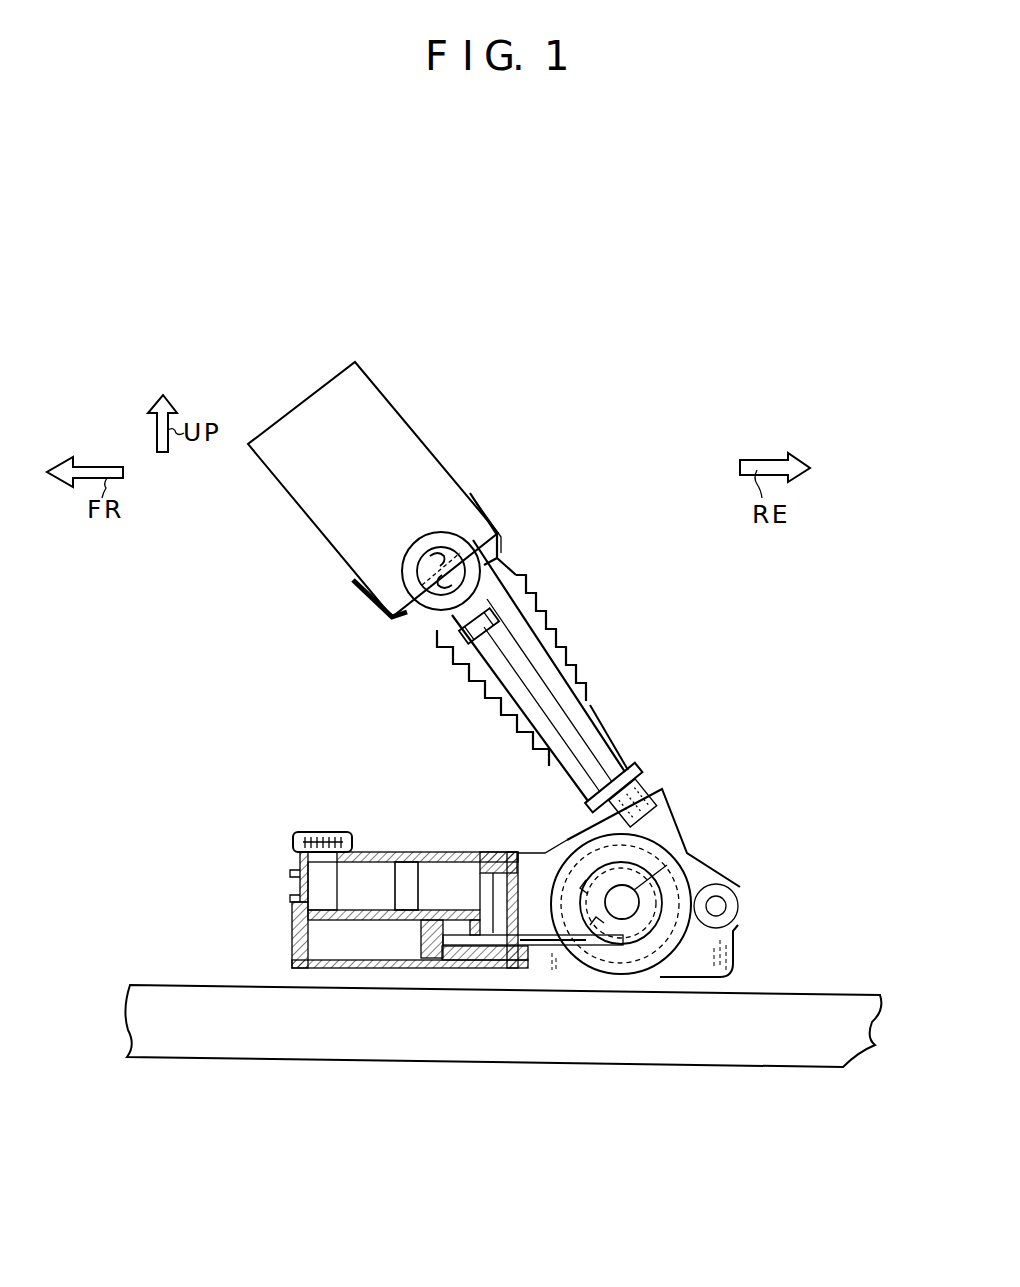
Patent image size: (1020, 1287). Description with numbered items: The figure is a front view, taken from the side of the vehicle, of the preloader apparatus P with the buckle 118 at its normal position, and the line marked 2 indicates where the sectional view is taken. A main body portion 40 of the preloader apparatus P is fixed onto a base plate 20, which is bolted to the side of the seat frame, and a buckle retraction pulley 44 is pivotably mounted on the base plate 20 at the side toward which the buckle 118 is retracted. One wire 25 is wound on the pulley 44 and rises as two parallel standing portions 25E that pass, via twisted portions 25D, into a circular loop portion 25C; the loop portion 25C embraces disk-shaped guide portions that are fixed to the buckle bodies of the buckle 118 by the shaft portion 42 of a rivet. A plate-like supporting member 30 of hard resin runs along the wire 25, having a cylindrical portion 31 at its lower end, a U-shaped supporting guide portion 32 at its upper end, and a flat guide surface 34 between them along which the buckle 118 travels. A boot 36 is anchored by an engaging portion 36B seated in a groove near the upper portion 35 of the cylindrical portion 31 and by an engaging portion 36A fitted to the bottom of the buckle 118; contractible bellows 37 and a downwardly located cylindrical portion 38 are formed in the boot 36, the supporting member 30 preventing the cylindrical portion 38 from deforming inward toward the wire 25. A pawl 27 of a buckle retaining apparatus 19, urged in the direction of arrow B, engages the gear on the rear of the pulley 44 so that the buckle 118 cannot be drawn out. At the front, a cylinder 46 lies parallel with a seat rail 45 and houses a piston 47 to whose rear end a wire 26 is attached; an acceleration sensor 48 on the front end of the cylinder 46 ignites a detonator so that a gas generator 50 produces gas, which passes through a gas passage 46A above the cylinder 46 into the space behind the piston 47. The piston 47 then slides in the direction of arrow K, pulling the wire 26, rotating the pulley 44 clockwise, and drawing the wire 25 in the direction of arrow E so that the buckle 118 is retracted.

The buckle 118 is at (385, 370).
The section line 2- 2 is at (290, 378).
The shaft portion 42 is at (392, 642).
The loop portion 25C is at (424, 538).
The engaging portion 36A is at (478, 507).
The twisted portions 25D is at (507, 578).
The supporting member 30 is at (528, 601).
The contractible bellows 37 is at (548, 648).
The standing portions 25E is at (537, 693).
The supporting guide portion 32 is at (468, 648).
The boot 36 is at (495, 722).
The guide surface 34 is at (523, 703).
The wire 25 is at (592, 742).
The cylindrical portion 38 is at (611, 752).
The engaging portion 36B is at (633, 803).
The upper portion 35 is at (613, 788).
The cylindrical portion 31 is at (640, 800).
The buckle retaining apparatus 19 is at (748, 880).
The pawl 27 is at (733, 928).
The base plate 20 is at (728, 966).
The buckle retraction pulley 44 is at (659, 976).
The main body portion 40 is at (320, 832).
The gas generator 50 is at (403, 873).
The gas passage 46A is at (463, 903).
The acceleration sensor 48 is at (317, 872).
The cylinder 46 is at (342, 975).
The piston 47 is at (428, 945).
The wire 26 is at (528, 947).
The seat rail 45 is at (758, 1055).
The arrow E is at (355, 630).
The preloader apparatus P is at (746, 702).
The arrow B is at (535, 918).
The arrow K is at (400, 942).